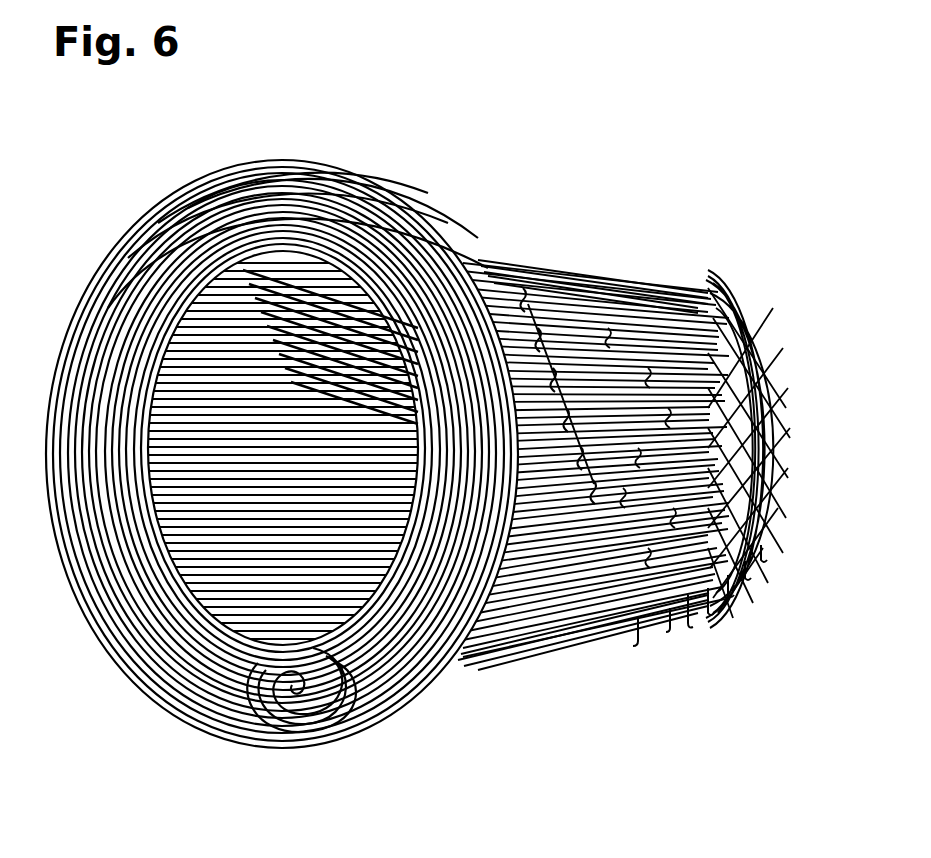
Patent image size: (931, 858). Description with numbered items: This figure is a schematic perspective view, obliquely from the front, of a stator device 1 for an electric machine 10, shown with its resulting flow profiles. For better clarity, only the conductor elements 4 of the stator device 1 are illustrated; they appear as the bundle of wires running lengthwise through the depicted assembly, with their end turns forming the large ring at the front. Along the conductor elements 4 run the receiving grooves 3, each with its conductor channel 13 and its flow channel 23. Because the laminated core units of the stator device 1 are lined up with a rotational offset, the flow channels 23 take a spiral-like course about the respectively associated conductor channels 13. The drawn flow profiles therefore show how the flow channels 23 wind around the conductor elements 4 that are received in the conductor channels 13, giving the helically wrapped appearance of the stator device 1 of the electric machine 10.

The stator device 1 is at (139, 158).
The receiving grooves 3 is at (490, 253).
The conductor elements 4 is at (150, 683).
The electric machine 10 is at (716, 188).
The conductor channels 13 is at (515, 283).
The flow channels 23 is at (557, 268).